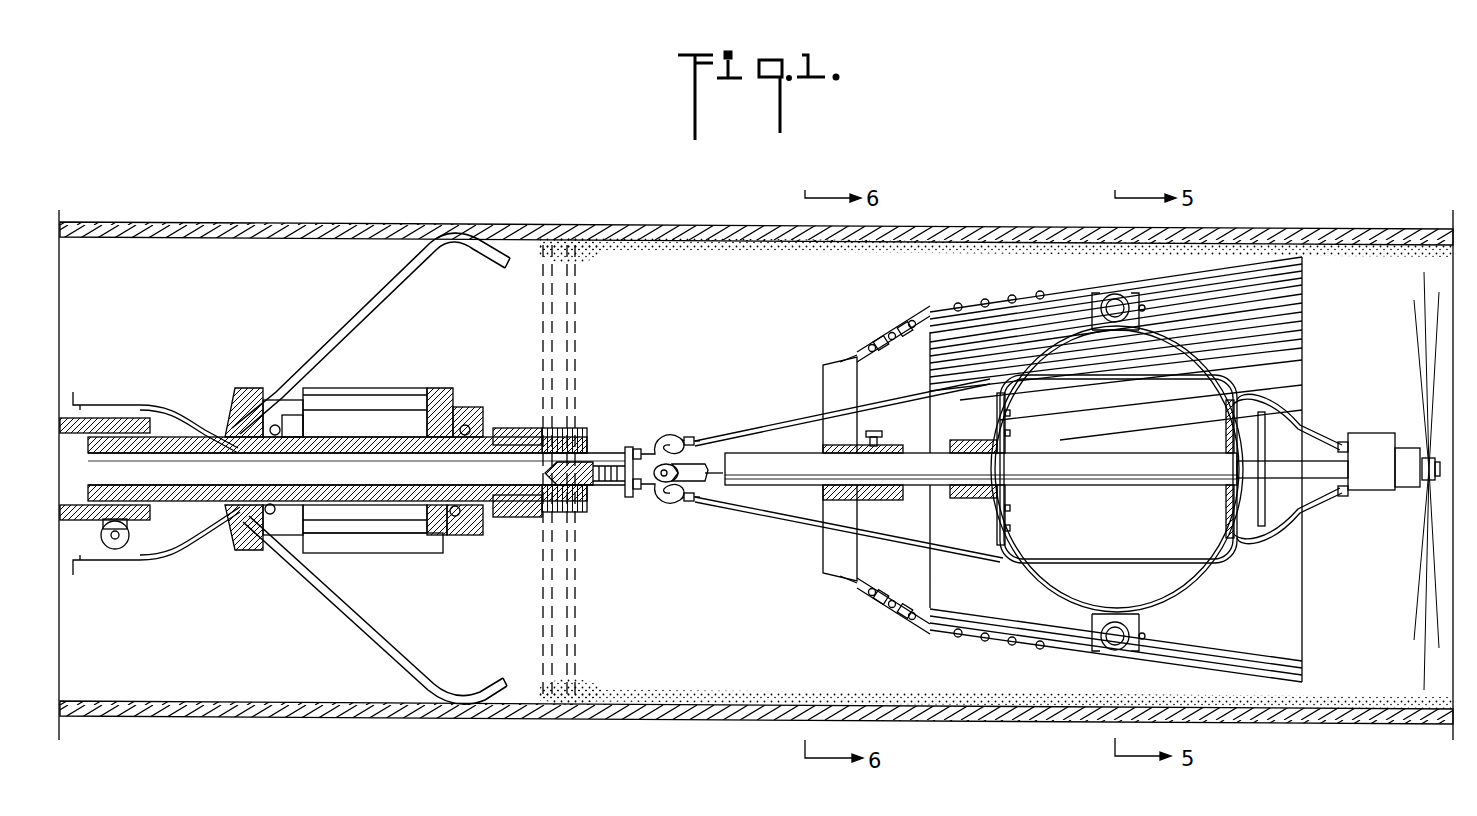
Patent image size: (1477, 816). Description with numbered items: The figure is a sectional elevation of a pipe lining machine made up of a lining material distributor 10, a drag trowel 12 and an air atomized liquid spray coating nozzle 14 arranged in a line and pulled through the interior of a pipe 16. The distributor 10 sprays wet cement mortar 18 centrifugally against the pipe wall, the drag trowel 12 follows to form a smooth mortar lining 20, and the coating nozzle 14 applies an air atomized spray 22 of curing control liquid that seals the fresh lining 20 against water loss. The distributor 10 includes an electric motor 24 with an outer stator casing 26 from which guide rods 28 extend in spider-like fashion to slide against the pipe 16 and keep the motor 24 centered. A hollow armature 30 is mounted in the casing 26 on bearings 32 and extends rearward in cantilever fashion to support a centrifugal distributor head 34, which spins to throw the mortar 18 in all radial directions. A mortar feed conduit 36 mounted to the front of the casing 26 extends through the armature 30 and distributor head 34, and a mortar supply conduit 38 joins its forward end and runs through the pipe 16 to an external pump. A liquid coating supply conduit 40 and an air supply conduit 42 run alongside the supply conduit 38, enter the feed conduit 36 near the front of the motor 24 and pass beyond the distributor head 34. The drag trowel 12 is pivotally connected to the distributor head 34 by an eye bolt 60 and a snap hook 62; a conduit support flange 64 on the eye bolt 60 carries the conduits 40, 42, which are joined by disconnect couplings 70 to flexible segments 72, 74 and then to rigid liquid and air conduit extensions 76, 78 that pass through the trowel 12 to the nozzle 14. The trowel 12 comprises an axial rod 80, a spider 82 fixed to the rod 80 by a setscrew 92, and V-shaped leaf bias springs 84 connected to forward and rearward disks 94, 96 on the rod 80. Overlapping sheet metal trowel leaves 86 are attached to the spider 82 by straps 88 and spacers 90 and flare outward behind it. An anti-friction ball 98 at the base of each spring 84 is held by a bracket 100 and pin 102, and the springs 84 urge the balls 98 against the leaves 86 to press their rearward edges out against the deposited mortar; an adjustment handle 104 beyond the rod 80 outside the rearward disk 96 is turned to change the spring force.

The lining material distributor 10 is at (470, 356).
The drag trowel 12 is at (853, 323).
The air atomized liquid spray coating nozzle 14 is at (1392, 430).
The pipe 16 is at (950, 229).
The wet cement mortar 18 is at (586, 600).
The mortar lining 20 is at (1350, 690).
The air atomized spray 22 is at (1422, 598).
The electric motor 24 is at (371, 400).
The outer stator casing 26 is at (242, 396).
The guide rods 28 is at (372, 643).
The hollow armature 30 is at (382, 535).
The bearings 32 is at (240, 520).
The centrifugal distributor head 34 is at (515, 519).
The mortar feed conduit 36 is at (178, 503).
The mortar supply conduit 38 is at (62, 428).
The liquid coating supply conduit 40 is at (601, 503).
The air supply conduit 42 is at (597, 445).
The eye bolt 60 is at (658, 483).
The snap hook 62 is at (690, 462).
The conduit support flange 64 is at (628, 447).
The disconnect couplings 70 is at (636, 496).
The flexible segment 72 is at (668, 512).
The flexible segment 74 is at (672, 432).
The rigid liquid conduit extension 76 is at (1313, 510).
The rigid air conduit extension 78 is at (1312, 428).
The axial rod 80 is at (1130, 453).
The spider 82 is at (822, 383).
The leaf bias springs 84 is at (1205, 590).
The trowel leaves 86 is at (997, 640).
The straps 88 is at (878, 601).
The spacers 90 is at (890, 592).
The setscrew 92 is at (884, 435).
The forward disk 94 is at (996, 413).
The rearward disk 96 is at (1246, 381).
The anti-friction ball 98 is at (1100, 647).
The bracket 100 is at (1092, 630).
The pin 102 is at (1146, 634).
The adjustment handle 104 is at (1262, 528).